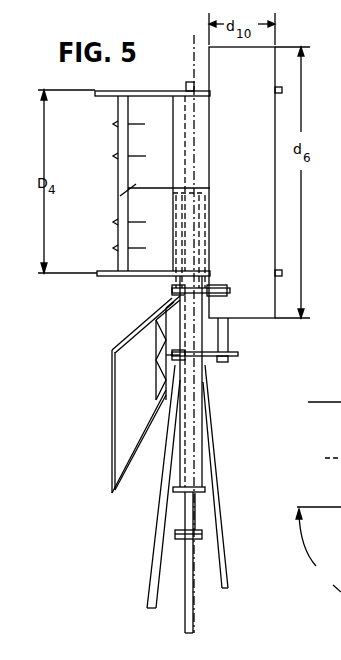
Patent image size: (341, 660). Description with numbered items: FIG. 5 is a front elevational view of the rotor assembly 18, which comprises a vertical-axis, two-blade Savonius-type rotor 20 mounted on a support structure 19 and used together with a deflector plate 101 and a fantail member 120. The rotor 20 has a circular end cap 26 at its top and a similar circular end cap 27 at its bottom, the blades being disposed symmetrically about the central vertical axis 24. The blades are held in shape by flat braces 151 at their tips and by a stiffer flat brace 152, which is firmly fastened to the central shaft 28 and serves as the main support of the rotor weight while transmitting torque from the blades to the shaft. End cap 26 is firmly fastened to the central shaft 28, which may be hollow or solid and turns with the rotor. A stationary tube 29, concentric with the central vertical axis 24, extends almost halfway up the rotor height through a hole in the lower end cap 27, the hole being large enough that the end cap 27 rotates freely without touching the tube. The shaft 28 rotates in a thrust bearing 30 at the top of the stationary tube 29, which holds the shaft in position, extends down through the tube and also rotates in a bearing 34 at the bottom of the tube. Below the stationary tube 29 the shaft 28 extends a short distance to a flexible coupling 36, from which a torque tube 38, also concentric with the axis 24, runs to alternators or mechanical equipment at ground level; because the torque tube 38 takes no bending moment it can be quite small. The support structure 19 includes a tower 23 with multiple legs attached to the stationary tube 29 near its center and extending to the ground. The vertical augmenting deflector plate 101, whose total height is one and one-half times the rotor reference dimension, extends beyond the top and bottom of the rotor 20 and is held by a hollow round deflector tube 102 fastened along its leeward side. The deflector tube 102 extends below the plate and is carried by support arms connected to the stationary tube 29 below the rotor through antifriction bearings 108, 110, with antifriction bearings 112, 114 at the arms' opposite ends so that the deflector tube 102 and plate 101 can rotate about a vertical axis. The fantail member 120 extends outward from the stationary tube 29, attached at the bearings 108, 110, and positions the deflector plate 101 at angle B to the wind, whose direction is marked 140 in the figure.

The rotor assembly 18 is at (101, 323).
The support structure 19 is at (149, 580).
The two-blade Savonius-type rotor 20 is at (115, 138).
The tower 23 is at (212, 458).
The central vertical axis 24 is at (193, 63).
The circular end cap 26 is at (120, 91).
The circular end cap 27 is at (110, 277).
The central shaft member 28 is at (184, 137).
The stationary tube 29 is at (177, 238).
The thrust bearing 30 is at (176, 203).
The bearing 34 is at (206, 489).
The flexible coupling 36 is at (175, 534).
The torque tube 38 is at (193, 614).
The vertical augmenting deflector plate 101 is at (275, 122).
The deflector tube 102 is at (229, 334).
The antifriction bearing 108 is at (172, 290).
The antifriction bearing 110 is at (176, 353).
The antifriction bearing 112 is at (222, 288).
The antifriction bearing 114 is at (238, 355).
The fantail member 120 is at (112, 402).
The wind direction 140 is at (318, 487).
The flat braces 151 is at (139, 124).
The flat brace 152 is at (128, 190).